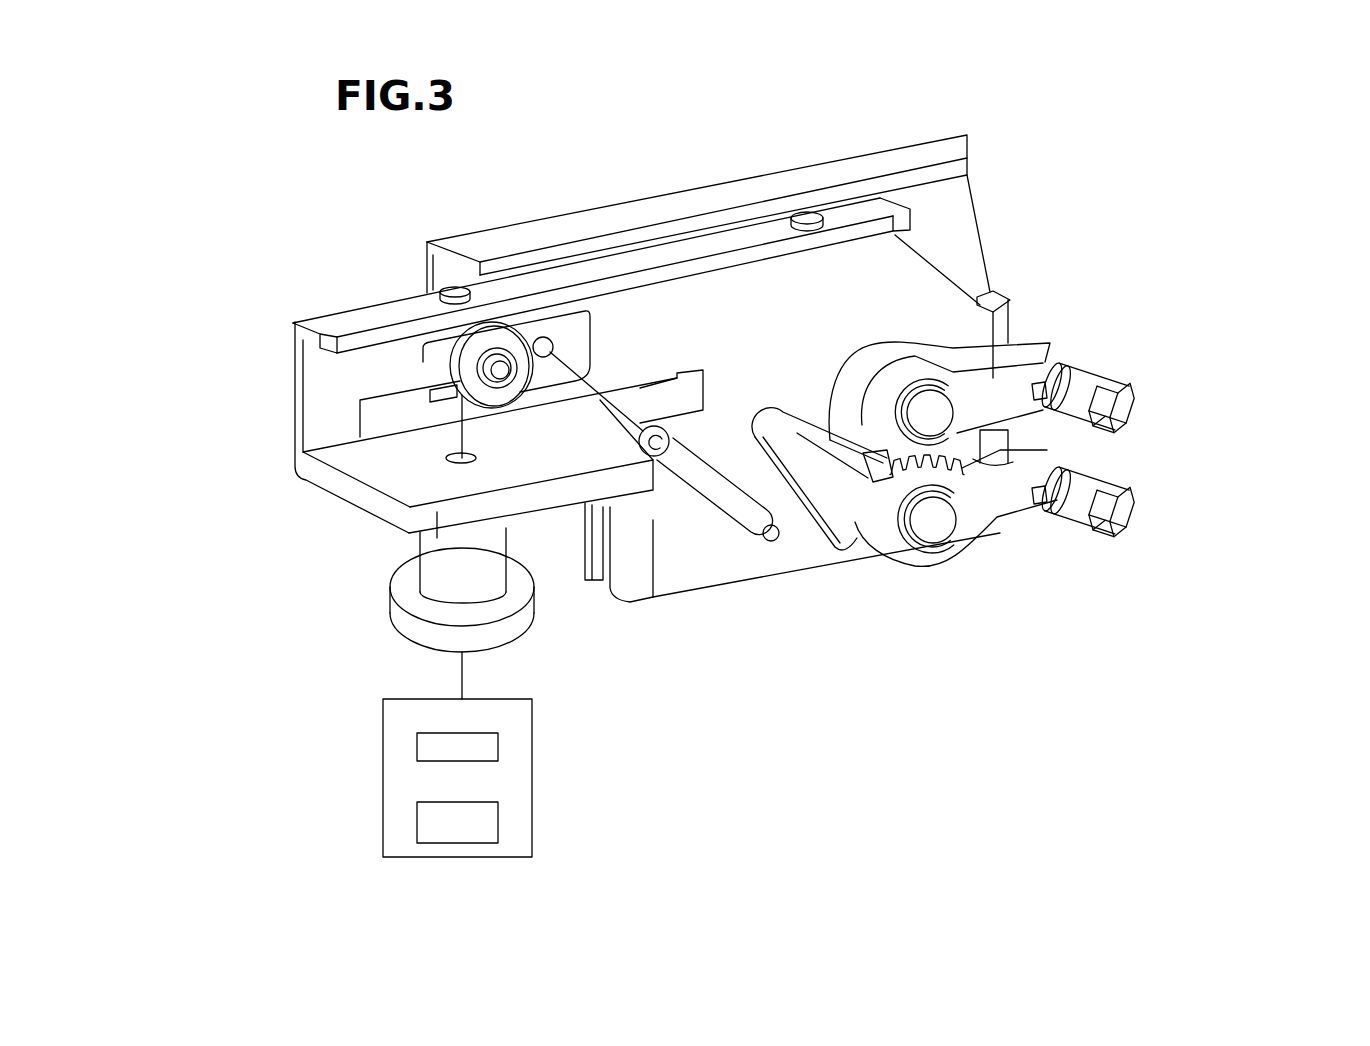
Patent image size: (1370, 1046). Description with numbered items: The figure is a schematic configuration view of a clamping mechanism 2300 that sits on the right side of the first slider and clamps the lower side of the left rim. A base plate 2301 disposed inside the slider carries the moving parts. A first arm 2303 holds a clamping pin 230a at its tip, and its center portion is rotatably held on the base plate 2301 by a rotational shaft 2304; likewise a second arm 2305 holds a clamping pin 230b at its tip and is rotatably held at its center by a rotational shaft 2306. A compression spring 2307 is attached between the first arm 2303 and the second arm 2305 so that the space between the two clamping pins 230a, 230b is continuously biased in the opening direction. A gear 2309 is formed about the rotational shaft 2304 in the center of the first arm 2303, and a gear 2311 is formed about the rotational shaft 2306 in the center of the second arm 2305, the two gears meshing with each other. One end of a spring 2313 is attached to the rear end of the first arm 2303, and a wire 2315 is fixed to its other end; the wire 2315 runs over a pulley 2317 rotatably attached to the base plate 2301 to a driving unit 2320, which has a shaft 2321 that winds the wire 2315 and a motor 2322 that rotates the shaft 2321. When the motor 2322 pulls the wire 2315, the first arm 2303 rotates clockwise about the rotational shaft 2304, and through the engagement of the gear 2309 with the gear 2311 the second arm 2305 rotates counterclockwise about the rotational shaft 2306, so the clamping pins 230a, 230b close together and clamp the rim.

The clamping mechanism 2300 is at (1100, 253).
The base plate 2301 is at (747, 297).
The first arm 2303 is at (993, 383).
The rotational shaft 2304 is at (930, 413).
The second arm 2305 is at (997, 505).
The rotational shaft 2306 is at (933, 522).
The compression spring 2307 is at (1030, 450).
The gear 2309 is at (890, 462).
The gear 2311 is at (893, 488).
The spring 2313 is at (705, 495).
The wire 2315 is at (592, 400).
The pulley 2317 is at (303, 373).
The driving unit 2320 is at (525, 790).
The shaft 2321 is at (417, 746).
The motor 2322 is at (417, 828).
The clamping pin 230a is at (1093, 383).
The clamping pin 230b is at (1113, 483).